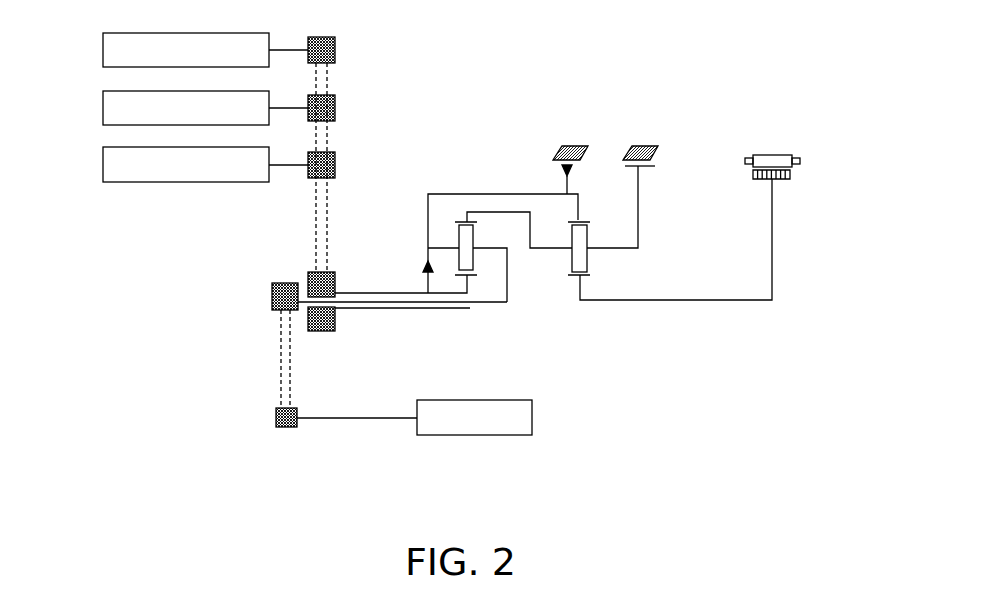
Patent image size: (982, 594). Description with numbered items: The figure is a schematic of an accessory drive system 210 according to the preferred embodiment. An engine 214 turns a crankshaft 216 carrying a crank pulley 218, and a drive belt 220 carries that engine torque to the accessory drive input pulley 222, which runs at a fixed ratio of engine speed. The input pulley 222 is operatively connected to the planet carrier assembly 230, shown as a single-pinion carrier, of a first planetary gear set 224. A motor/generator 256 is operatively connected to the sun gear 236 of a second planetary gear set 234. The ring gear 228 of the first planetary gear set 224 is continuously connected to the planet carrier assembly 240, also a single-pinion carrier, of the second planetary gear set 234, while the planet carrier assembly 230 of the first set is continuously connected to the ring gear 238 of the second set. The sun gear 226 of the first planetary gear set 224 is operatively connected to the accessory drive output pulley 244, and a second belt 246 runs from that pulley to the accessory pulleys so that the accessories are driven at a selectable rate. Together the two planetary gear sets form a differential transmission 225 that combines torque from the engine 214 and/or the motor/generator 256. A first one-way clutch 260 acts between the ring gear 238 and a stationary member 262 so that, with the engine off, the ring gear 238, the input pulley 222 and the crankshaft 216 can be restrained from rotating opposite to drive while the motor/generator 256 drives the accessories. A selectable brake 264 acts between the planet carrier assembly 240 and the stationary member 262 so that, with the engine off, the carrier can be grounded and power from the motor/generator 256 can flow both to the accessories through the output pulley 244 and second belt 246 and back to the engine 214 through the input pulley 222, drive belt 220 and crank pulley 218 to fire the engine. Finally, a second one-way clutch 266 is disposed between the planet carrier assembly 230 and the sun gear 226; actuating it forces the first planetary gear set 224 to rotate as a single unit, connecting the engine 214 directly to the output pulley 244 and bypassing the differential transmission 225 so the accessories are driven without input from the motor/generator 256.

The accessory drive system 210 is at (775, 62).
The engine 214 is at (505, 435).
The crankshaft 216 is at (355, 418).
The crank pulley 218 is at (276, 418).
The drive belt 220 is at (272, 356).
The accessory drive input pulley 222 is at (272, 297).
The first planetary gear set 224 is at (486, 276).
The differential transmission 225 is at (765, 378).
The sun gear 226 is at (473, 280).
The ring gear 228 is at (458, 222).
The planet carrier assembly 230 is at (498, 242).
The second planetary gear set 234 is at (608, 276).
The sun gear 236 is at (577, 278).
The ring gear 238 is at (582, 220).
The planet carrier assembly 240 is at (551, 250).
The accessory drive output pulley 244 is at (308, 279).
The second belt 246 is at (307, 213).
The motor/generator 256 is at (775, 148).
The first one-way clutch 260 is at (560, 171).
The stationary member 262 is at (645, 140).
The selectable brake 264 is at (640, 170).
The second one-way clutch 266 is at (428, 262).